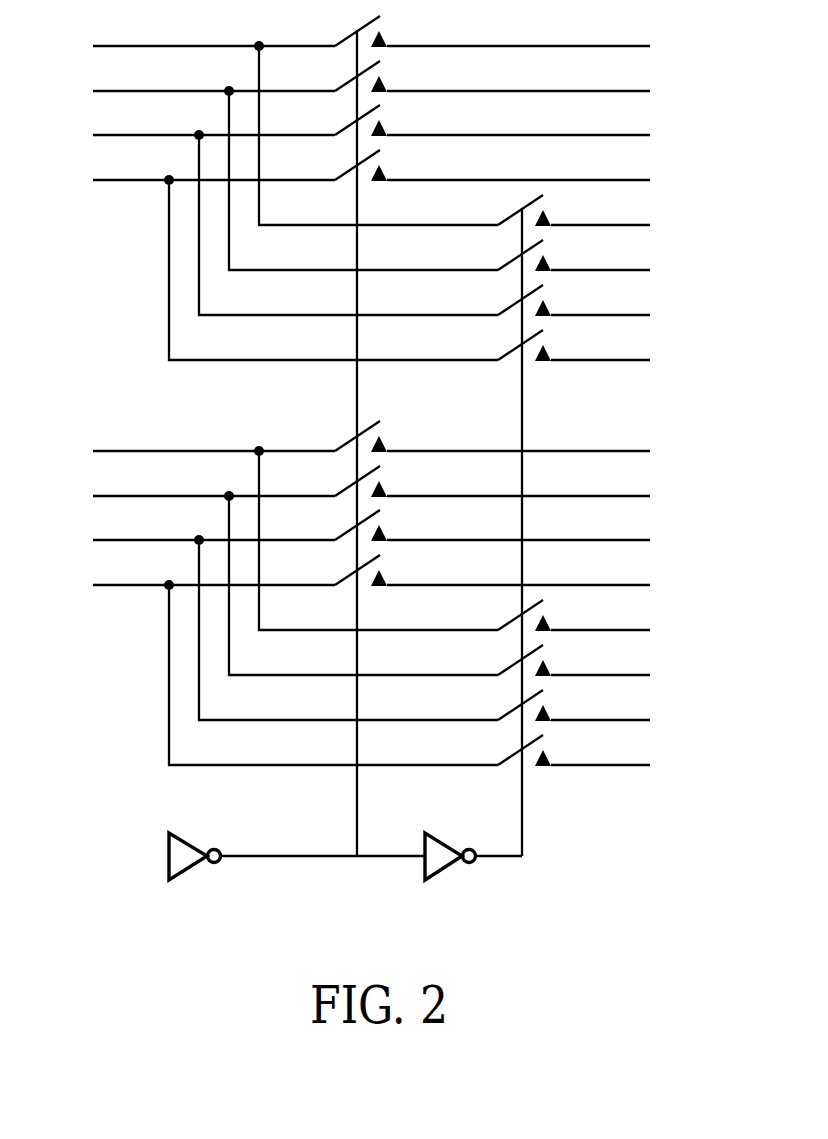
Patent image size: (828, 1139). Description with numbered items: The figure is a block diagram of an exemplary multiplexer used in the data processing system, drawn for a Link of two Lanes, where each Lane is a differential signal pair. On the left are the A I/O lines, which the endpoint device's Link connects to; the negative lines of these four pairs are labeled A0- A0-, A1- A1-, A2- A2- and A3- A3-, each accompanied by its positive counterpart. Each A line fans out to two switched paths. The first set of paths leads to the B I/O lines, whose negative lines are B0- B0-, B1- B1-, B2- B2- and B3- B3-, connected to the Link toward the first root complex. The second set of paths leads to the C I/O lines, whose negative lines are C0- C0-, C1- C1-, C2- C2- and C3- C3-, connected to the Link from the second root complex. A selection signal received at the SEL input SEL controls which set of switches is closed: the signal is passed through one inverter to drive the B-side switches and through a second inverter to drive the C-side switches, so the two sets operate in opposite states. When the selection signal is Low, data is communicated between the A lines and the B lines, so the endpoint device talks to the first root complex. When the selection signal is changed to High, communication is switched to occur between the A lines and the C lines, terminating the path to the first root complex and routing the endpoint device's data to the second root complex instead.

The SEL selection signal input SEL is at (169, 856).
The A0− I/O line A0- is at (195, 91).
The A1− I/O line A1- is at (195, 180).
The A2− I/O line A2- is at (195, 496).
The A3− I/O line A3- is at (195, 585).
The B0− I/O line B0- is at (512, 82).
The B1− I/O line B1- is at (512, 171).
The B2− I/O line B2- is at (512, 487).
The B3− I/O line B3- is at (512, 576).
The C0− I/O line C0- is at (459, 186).
The C1− I/O line C1- is at (429, 276).
The C2− I/O line C2- is at (459, 591).
The C3− I/O line C3- is at (429, 681).